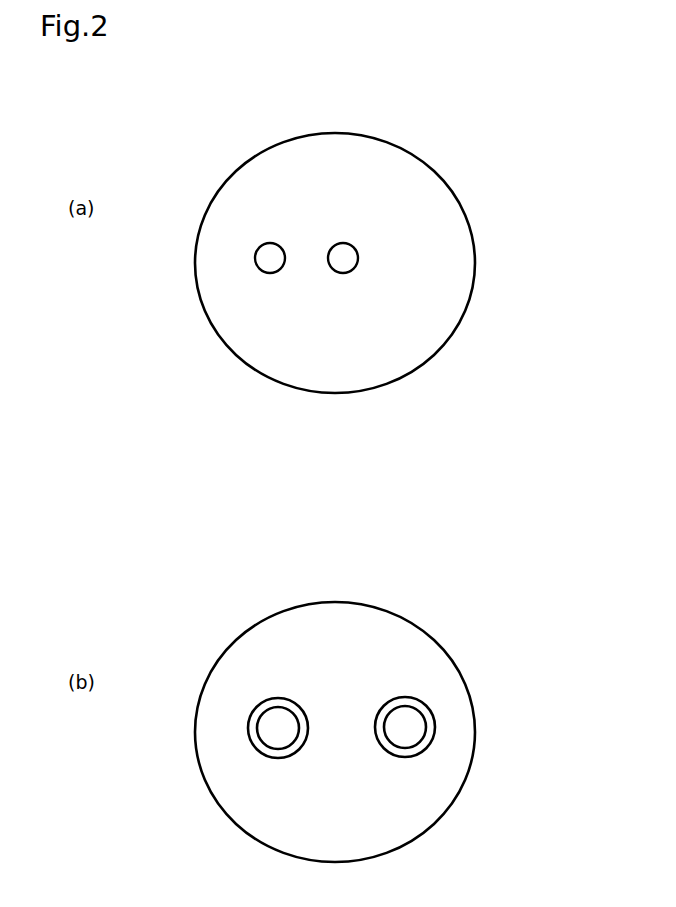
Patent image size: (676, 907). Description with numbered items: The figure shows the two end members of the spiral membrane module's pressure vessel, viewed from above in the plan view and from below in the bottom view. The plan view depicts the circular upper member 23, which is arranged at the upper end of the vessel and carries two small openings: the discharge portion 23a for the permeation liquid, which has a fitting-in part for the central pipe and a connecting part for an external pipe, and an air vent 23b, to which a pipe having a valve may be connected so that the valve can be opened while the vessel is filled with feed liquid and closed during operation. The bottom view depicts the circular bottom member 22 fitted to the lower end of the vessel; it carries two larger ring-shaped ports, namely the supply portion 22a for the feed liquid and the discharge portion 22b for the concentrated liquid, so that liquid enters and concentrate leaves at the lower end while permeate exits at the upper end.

The upper member 23 is at (475, 253).
The discharge portion for the permeation liquid 23a is at (336, 260).
The air vent 23b is at (273, 262).
The bottom member 22 is at (475, 713).
The supply portion for the feed liquid 22a is at (403, 730).
The discharge portion for the concentrated liquid 22b is at (276, 730).